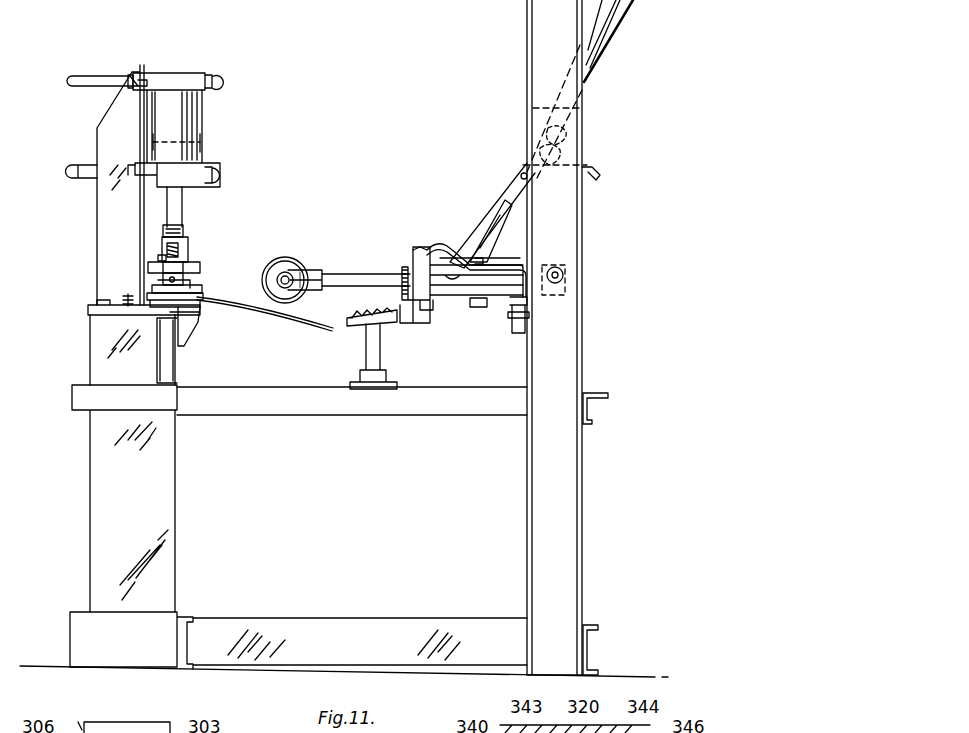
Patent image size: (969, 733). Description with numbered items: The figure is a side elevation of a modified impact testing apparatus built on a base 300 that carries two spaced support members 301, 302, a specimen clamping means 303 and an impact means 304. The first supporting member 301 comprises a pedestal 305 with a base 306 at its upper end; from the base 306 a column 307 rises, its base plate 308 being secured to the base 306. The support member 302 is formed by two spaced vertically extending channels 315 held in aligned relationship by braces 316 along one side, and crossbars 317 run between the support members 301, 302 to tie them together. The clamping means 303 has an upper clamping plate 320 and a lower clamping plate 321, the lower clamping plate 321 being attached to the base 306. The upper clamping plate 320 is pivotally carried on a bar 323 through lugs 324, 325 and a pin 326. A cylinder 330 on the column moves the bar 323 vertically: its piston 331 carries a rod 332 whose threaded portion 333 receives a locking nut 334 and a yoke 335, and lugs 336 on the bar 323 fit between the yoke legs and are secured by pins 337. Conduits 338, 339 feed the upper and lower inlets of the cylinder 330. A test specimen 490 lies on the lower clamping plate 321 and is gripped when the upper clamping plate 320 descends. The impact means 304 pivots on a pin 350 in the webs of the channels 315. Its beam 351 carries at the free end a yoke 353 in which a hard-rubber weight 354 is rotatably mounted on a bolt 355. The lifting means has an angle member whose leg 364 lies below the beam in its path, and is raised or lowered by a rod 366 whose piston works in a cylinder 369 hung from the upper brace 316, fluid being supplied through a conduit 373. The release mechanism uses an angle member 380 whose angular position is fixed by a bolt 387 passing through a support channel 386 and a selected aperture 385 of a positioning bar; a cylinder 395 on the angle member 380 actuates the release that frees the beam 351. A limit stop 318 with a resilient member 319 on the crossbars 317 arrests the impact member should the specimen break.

The base 300 is at (309, 625).
The first supporting member 301 is at (88, 350).
The support member 302 is at (591, 337).
The specimen clamping means 303 is at (168, 190).
The impact means 304 is at (458, 207).
The pedestal 305 is at (103, 491).
The base 306 is at (105, 366).
The column 307 is at (98, 200).
The base plate 308 is at (92, 311).
The channel 315 is at (560, 489).
The brace 316 is at (590, 412).
The crossbar 317 is at (309, 405).
The limit stop 318 is at (370, 325).
The resilient member 319 is at (386, 326).
The upper clamping plate 320 is at (203, 297).
The lower clamping plate 321 is at (199, 315).
The bar 323 is at (200, 267).
The lug 324 is at (180, 291).
The lug 325 is at (184, 279).
The pin 326 is at (172, 282).
The cylinder 330 is at (182, 108).
The piston 331 is at (206, 156).
The rod 332 is at (175, 199).
The threaded portion 333 is at (181, 229).
The locking nut 334 is at (188, 244).
The yoke 335 is at (190, 249).
The lug 336 is at (160, 257).
The pin 337 is at (165, 266).
The conduit 338 is at (90, 76).
The conduit 339 is at (76, 165).
The pin 350 is at (568, 273).
The beam 351 is at (370, 273).
The yoke 353 is at (340, 270).
The weight 354 is at (287, 260).
The bolt 355 is at (292, 278).
The leg 364 is at (478, 310).
The rod 366 is at (507, 240).
The cylinder 369 is at (600, 26).
The conduit 373 is at (600, 170).
The angle member 380 is at (455, 298).
The aperture 385 is at (520, 174).
The support channel 386 is at (565, 152).
The bolt 387 is at (568, 132).
The cylinder 395 is at (415, 250).
The test specimen 490 is at (262, 318).